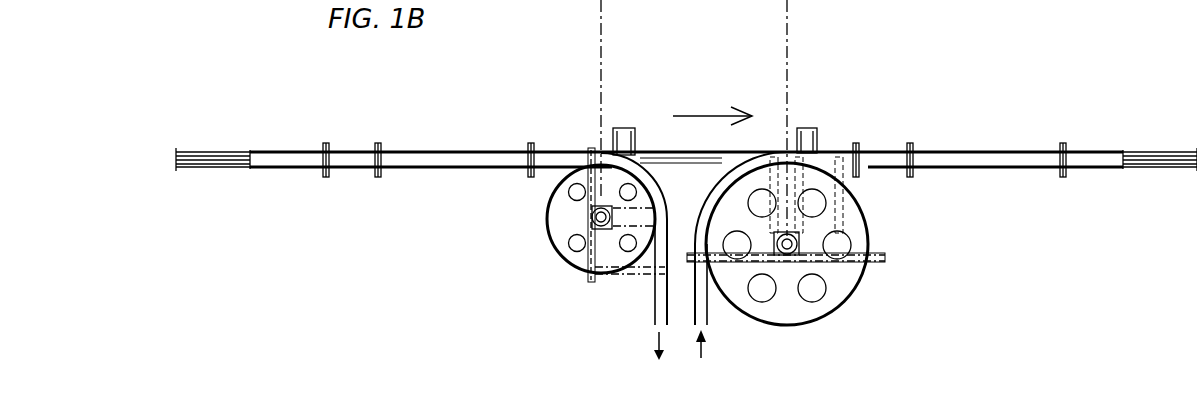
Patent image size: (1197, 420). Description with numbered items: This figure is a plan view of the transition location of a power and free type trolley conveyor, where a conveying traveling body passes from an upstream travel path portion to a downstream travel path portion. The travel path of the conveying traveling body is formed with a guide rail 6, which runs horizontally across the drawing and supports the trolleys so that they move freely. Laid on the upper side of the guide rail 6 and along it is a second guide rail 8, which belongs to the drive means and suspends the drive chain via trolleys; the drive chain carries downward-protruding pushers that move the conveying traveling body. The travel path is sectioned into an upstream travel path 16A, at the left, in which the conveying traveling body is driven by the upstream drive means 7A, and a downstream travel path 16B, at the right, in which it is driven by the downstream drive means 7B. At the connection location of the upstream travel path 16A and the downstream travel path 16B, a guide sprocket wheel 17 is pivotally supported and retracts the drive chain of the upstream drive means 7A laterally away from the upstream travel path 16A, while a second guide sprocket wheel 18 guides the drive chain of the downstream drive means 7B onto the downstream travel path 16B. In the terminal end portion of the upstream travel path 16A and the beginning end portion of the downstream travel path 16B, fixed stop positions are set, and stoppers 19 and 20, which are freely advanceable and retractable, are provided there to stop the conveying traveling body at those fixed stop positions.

The guide rail 6 is at (220, 166).
The upstream drive means 7A is at (444, 147).
The downstream drive means 7B is at (1033, 146).
The guide rail 8 is at (420, 163).
The upstream travel path 16A is at (227, 146).
The downstream travel path 16B is at (1152, 146).
The guide sprocket wheel 17 is at (548, 212).
The guide sprocket wheel 18 is at (845, 276).
The stopper 19 is at (630, 128).
The stopper 20 is at (807, 128).